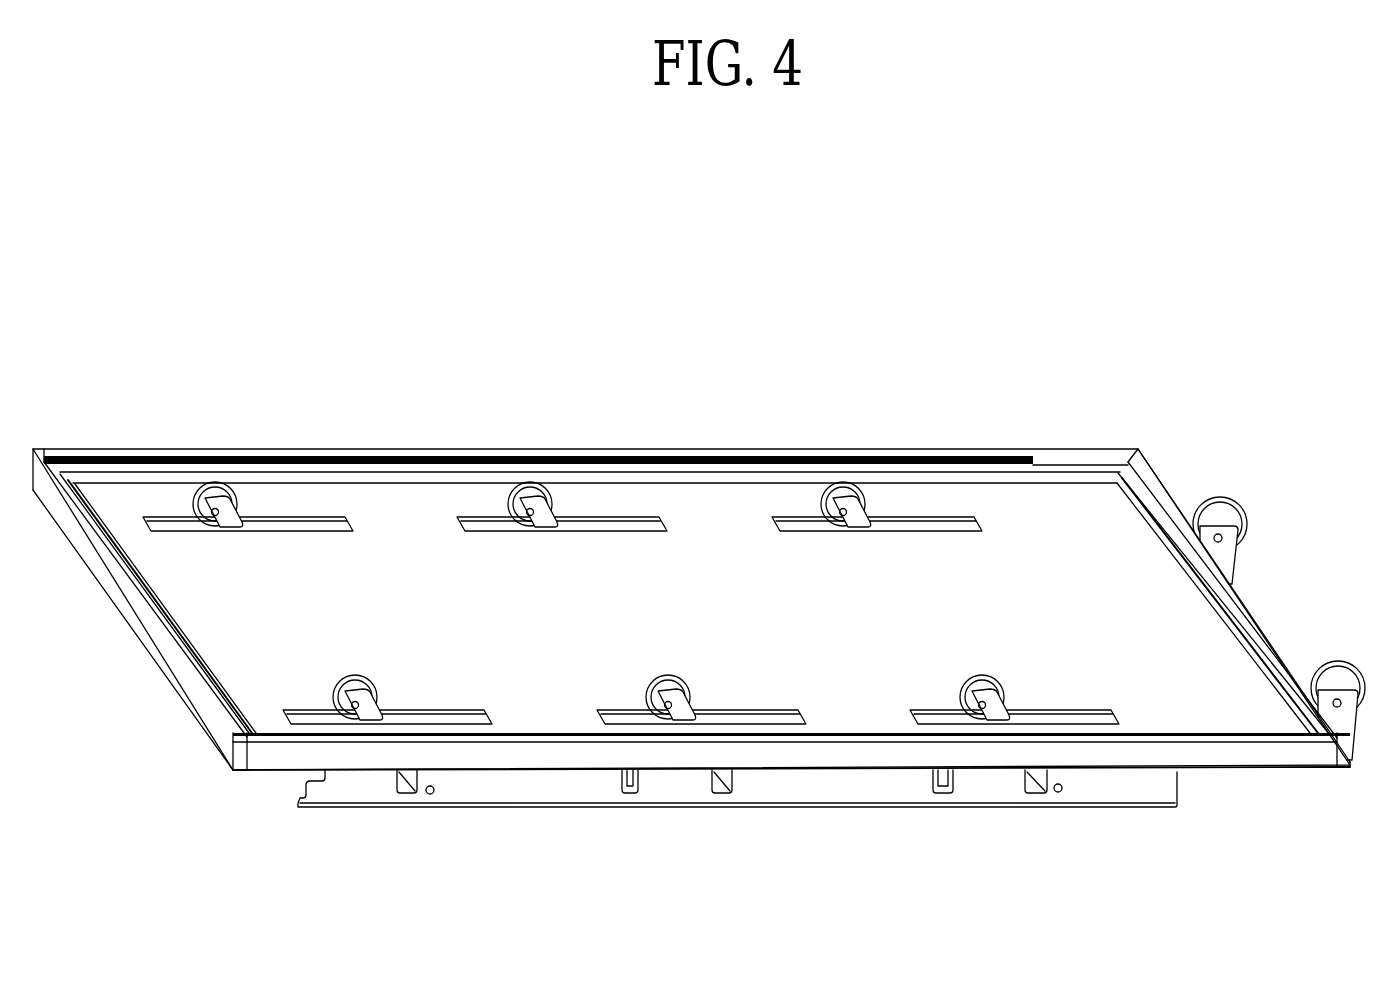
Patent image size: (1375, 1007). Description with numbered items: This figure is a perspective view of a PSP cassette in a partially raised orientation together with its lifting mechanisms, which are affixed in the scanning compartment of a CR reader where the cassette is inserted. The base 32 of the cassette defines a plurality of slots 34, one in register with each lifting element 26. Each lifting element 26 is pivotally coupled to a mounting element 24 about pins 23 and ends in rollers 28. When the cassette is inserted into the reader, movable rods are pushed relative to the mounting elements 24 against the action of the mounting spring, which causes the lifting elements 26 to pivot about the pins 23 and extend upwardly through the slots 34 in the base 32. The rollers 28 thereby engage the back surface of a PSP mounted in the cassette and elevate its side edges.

The base 32 is at (498, 578).
The slots 34 is at (245, 518).
The lifting element 26 is at (690, 717).
The rollers 28 is at (978, 687).
The mounting element 24 is at (502, 788).
The pins 23 is at (743, 788).